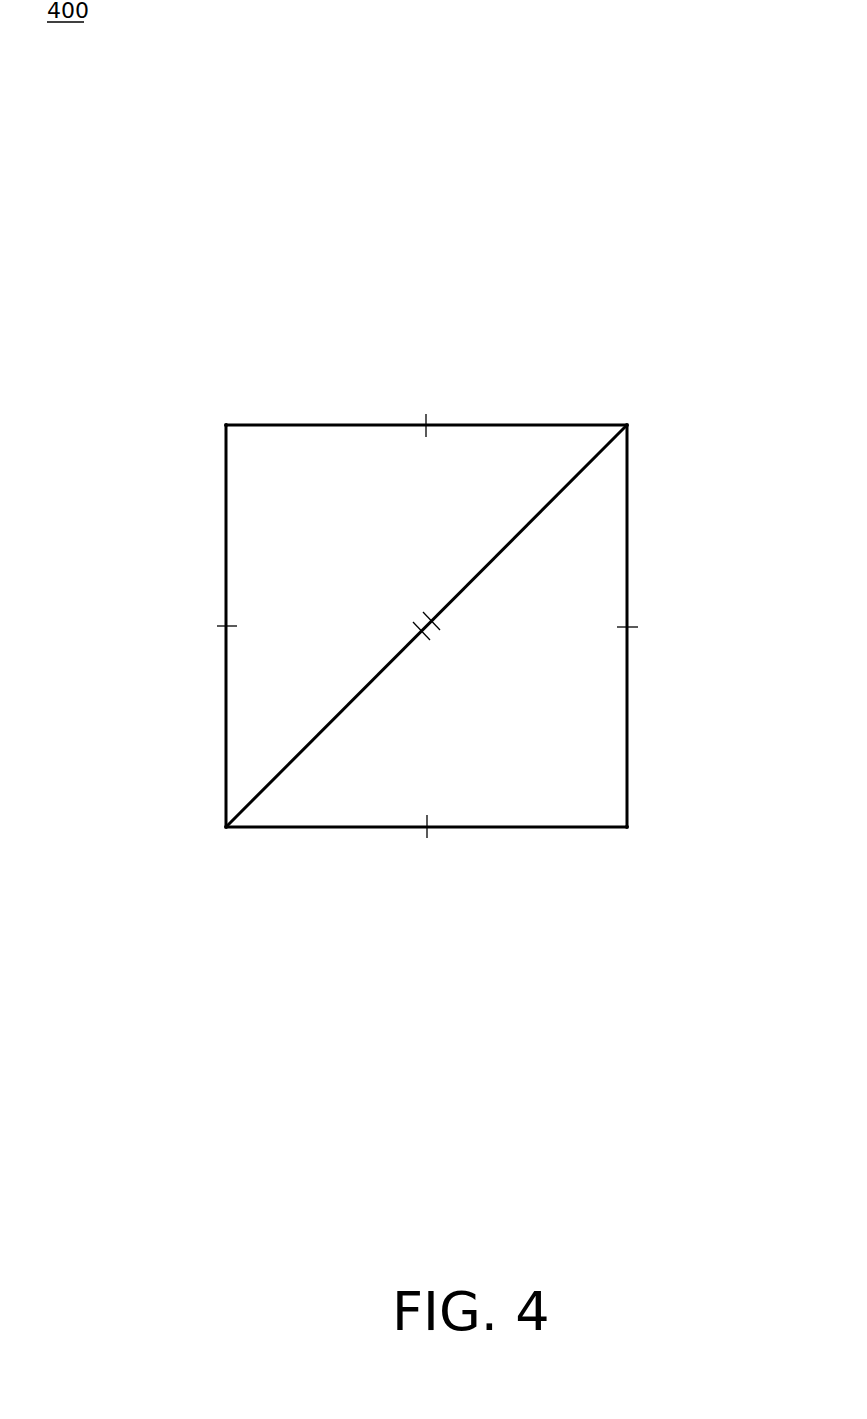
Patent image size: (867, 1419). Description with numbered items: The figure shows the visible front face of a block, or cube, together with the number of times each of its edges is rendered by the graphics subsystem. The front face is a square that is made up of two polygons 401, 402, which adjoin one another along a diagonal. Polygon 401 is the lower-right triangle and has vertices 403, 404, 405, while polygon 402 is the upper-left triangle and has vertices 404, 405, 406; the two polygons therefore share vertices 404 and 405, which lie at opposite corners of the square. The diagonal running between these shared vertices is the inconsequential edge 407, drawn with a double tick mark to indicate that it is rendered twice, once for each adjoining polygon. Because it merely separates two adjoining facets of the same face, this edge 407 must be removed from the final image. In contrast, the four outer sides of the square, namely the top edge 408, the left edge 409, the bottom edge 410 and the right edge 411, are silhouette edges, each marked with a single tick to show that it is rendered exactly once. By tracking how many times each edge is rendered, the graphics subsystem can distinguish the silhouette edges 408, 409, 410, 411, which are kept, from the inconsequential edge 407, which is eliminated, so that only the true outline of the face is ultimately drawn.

The polygon 401 is at (538, 720).
The polygon 402 is at (351, 552).
The vertex 403 is at (627, 827).
The vertex 404 is at (627, 425).
The vertex 405 is at (226, 827).
The vertex 406 is at (226, 425).
The inconsequential edge 407 is at (467, 585).
The silhouette edge 408 is at (508, 425).
The silhouette edge 409 is at (226, 668).
The silhouette edge 410 is at (347, 827).
The silhouette edge 411 is at (627, 572).